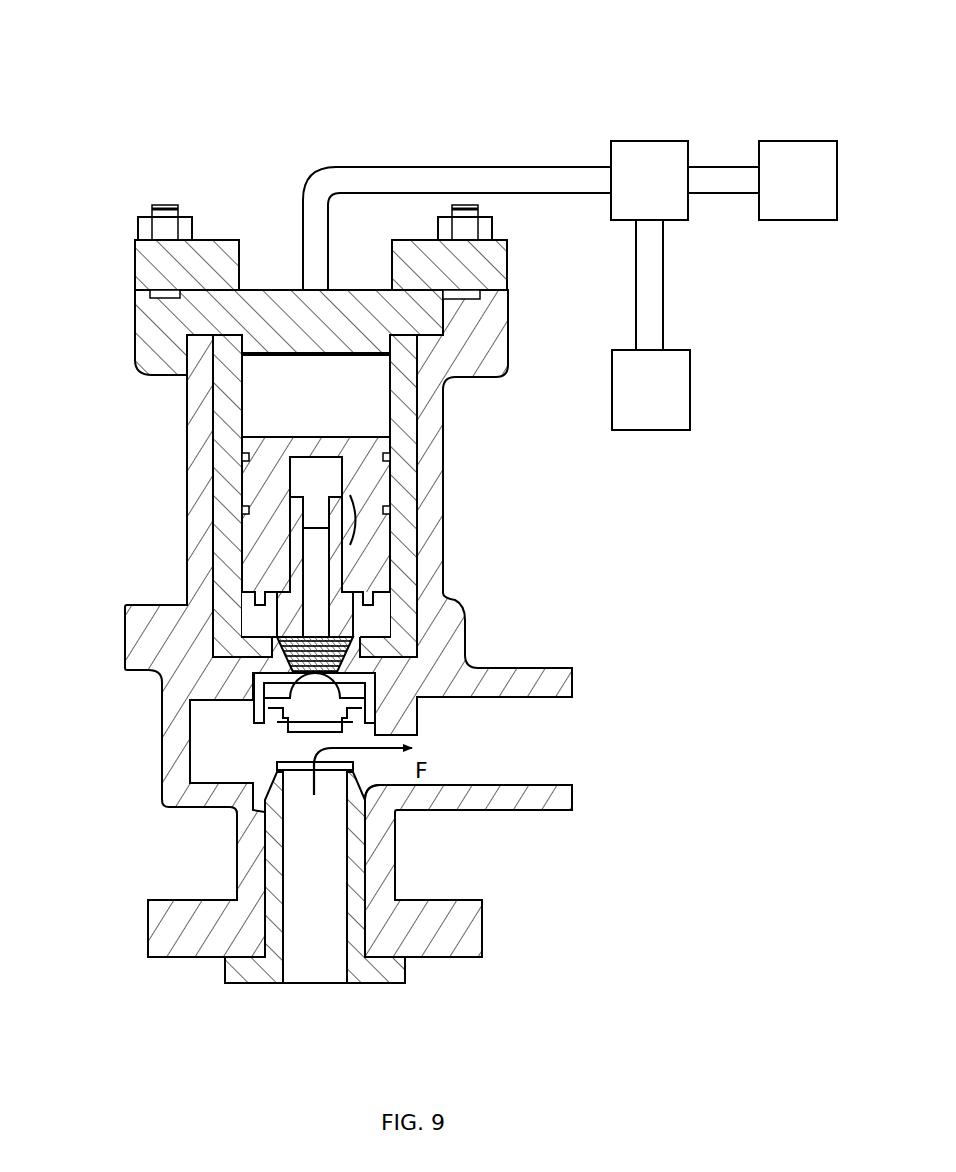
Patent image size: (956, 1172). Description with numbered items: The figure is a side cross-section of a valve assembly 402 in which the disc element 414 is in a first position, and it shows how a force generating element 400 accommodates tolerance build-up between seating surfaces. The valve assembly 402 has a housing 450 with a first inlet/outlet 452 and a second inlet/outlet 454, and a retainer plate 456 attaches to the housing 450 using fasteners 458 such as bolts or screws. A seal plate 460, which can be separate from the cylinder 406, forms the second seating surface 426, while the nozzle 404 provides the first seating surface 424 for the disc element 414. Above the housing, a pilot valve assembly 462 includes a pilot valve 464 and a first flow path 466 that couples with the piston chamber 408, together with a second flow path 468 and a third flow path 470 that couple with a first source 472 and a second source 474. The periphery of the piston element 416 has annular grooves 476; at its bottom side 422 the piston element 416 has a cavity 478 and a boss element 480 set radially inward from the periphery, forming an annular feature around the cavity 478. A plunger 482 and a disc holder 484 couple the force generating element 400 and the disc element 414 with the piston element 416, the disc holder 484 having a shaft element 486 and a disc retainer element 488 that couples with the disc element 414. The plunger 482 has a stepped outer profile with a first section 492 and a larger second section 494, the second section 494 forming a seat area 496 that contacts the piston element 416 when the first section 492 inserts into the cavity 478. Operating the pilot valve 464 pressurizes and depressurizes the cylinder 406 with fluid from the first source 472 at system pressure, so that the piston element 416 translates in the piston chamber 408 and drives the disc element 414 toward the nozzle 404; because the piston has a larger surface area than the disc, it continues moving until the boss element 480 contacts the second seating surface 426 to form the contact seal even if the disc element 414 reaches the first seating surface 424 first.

The valve assembly 402 is at (168, 62).
The fasteners 458 is at (146, 186).
The retainer plate 456 is at (135, 265).
The housing 450 is at (135, 365).
The piston chamber 408 is at (263, 392).
The piston element 416 is at (255, 446).
The cavity 478 is at (297, 475).
The seat area 496 is at (283, 592).
The boss element 480 is at (245, 597).
The bottom side 422 is at (248, 617).
The second section 494 is at (277, 627).
The shaft element 486 is at (254, 700).
The disc retainer element 488 is at (254, 722).
The disc element 414 is at (265, 772).
The nozzle 404 is at (230, 965).
The first inlet/outlet 452 is at (281, 1005).
The first flow path 466 is at (447, 167).
The pilot valve assembly 462 is at (610, 115).
The pilot valve 464 is at (632, 192).
The second source 474 is at (780, 192).
The first source 472 is at (633, 401).
The third flow path 470 is at (717, 194).
The second flow path 468 is at (665, 325).
The cylinder 406 is at (405, 408).
The annular grooves 476 is at (390, 510).
The first section 492 is at (353, 500).
The plunger 482 is at (395, 600).
The second seating surface 426 is at (372, 628).
The seal plate 460 is at (380, 672).
The force generating element 400 is at (364, 668).
The disc holder 484 is at (363, 690).
The second inlet/outlet 454 is at (550, 740).
The first seating surface 424 is at (395, 808).